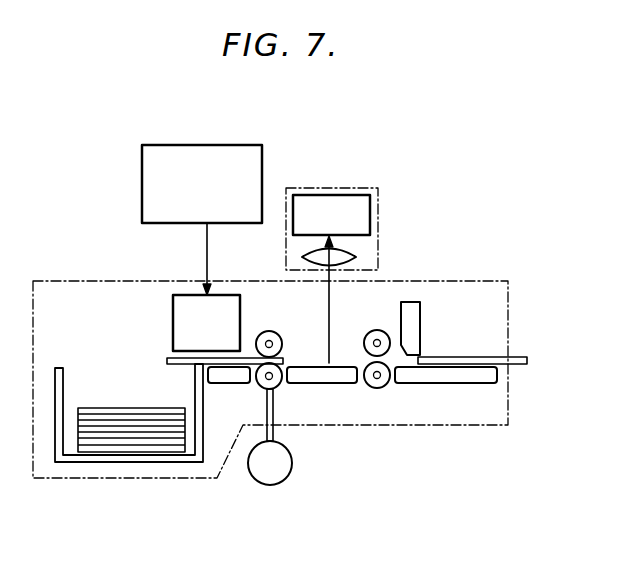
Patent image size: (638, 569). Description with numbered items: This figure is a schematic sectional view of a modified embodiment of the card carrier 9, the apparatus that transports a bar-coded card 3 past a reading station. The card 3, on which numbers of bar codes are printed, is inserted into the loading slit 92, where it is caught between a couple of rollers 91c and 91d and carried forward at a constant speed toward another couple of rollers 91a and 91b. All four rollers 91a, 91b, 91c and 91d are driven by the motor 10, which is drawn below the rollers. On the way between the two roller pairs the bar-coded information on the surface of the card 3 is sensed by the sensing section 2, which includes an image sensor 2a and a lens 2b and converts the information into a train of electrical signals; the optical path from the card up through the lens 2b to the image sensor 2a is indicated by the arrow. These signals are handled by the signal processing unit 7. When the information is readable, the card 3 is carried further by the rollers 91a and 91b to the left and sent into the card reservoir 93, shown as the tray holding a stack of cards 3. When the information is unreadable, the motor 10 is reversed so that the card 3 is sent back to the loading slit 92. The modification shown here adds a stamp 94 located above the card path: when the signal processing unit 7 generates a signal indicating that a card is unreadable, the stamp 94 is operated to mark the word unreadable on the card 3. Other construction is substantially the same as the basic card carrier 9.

The signal processing unit 7 is at (217, 146).
The sensing section 2 is at (350, 222).
The image sensor 2a is at (371, 196).
The lens 2b is at (352, 258).
The card carrier 9 is at (494, 426).
The stamp 94 is at (173, 320).
The card reservoir 93 is at (55, 458).
The card 3 is at (108, 408).
The roller 91a is at (279, 386).
The roller 91b is at (273, 330).
The roller 91c is at (379, 389).
The roller 91d is at (375, 330).
The loading slit 92 is at (420, 346).
The motor 10 is at (289, 478).